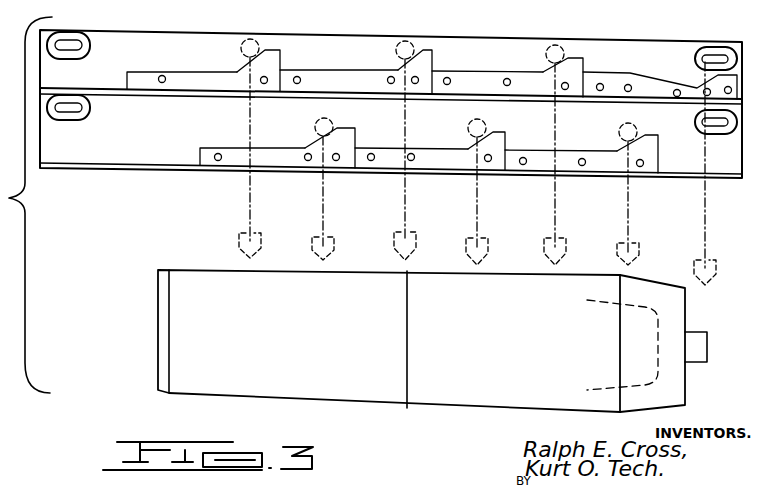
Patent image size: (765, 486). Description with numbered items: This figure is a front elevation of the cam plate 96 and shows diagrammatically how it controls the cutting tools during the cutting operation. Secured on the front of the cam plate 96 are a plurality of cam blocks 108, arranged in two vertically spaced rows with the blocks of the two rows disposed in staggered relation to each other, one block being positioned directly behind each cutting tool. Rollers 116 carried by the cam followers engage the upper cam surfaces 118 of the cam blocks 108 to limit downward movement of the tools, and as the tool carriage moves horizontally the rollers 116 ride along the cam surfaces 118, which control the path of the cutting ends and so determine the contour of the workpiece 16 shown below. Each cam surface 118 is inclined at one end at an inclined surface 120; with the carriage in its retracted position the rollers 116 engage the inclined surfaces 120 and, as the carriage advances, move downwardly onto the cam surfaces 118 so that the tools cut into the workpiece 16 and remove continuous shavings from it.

The workpiece 16 is at (488, 399).
The cam plate 96 is at (513, 40).
The cam blocks 108 is at (200, 77).
The rollers 116 is at (558, 65).
The cam surfaces 118 is at (324, 68).
The inclined surfaces 120 is at (408, 62).